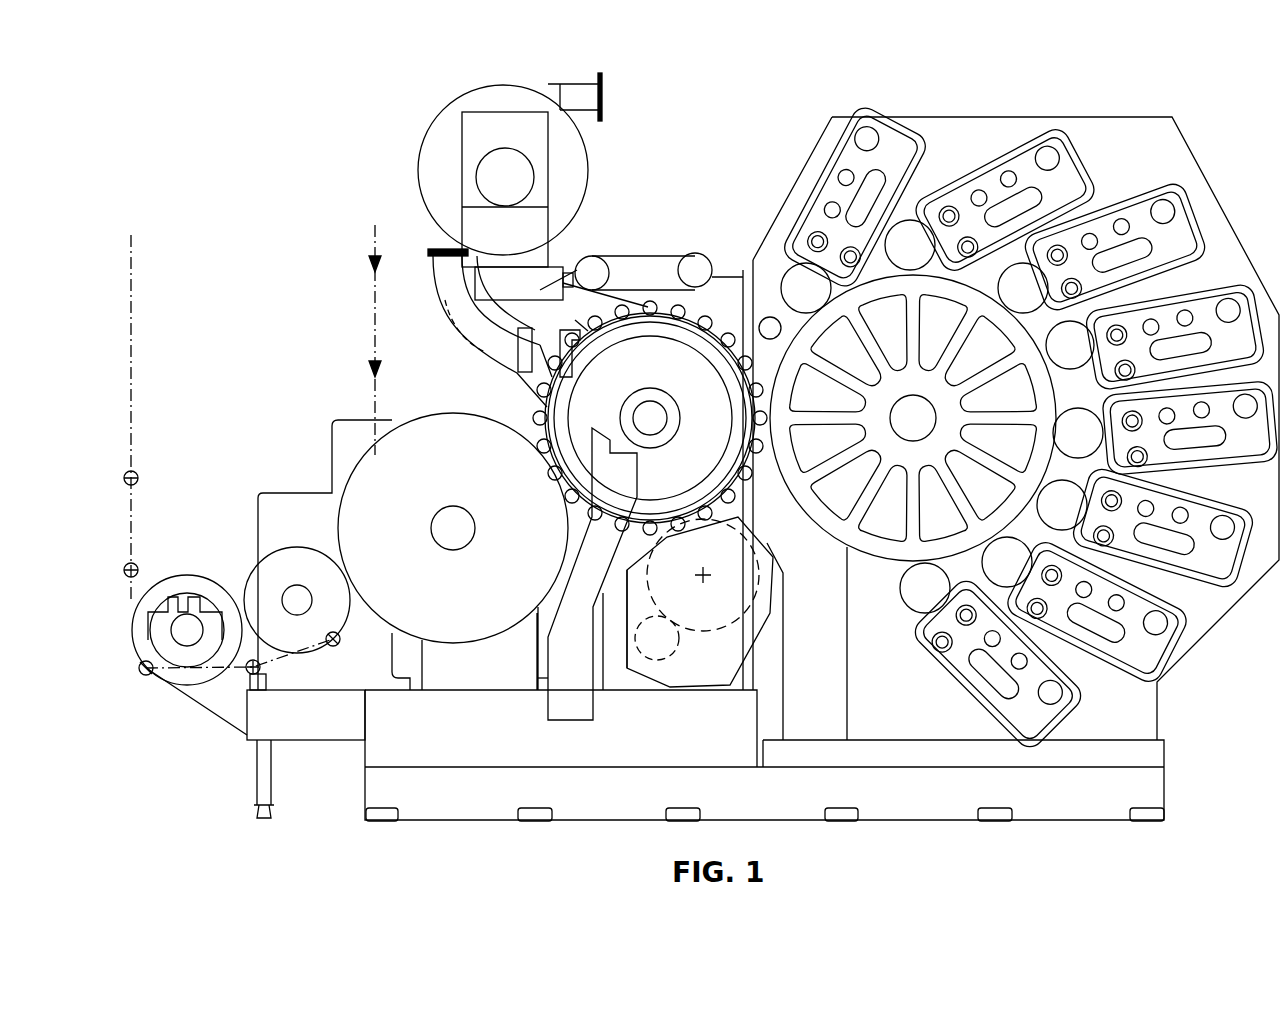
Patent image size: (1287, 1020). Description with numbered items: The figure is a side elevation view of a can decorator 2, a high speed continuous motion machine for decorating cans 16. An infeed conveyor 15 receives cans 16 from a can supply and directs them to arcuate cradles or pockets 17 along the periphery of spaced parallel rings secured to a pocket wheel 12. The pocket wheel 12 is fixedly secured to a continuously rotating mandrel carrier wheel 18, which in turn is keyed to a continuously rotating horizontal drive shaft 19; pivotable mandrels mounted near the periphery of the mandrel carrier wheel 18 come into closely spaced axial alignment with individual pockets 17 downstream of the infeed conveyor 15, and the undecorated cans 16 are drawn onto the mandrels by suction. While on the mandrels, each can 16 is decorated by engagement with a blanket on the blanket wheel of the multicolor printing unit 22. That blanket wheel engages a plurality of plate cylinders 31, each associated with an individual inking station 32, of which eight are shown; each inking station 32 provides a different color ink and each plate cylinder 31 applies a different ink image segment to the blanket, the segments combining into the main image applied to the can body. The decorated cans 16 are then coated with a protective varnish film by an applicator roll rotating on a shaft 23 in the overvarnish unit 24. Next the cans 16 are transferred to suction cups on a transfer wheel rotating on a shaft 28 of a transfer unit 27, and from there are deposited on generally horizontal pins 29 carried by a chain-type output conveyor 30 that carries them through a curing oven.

The can decorator 2 is at (805, 116).
The pocket wheel 12 is at (665, 355).
The infeed conveyor 15 is at (445, 248).
The can 16 is at (514, 408).
The pocket 17 is at (707, 313).
The mandrel carrier wheel 18 is at (577, 320).
The horizontal drive shaft 19 is at (655, 427).
The multicolor printing unit 22 is at (1163, 108).
The shaft 23 is at (704, 598).
The overvarnish unit 24 is at (663, 698).
The transfer unit 27 is at (470, 618).
The shaft 28 is at (442, 522).
The pin 29 is at (326, 660).
The output conveyor 30 is at (362, 280).
The plate cylinder 31 is at (906, 232).
The inking station 32 is at (1217, 287).